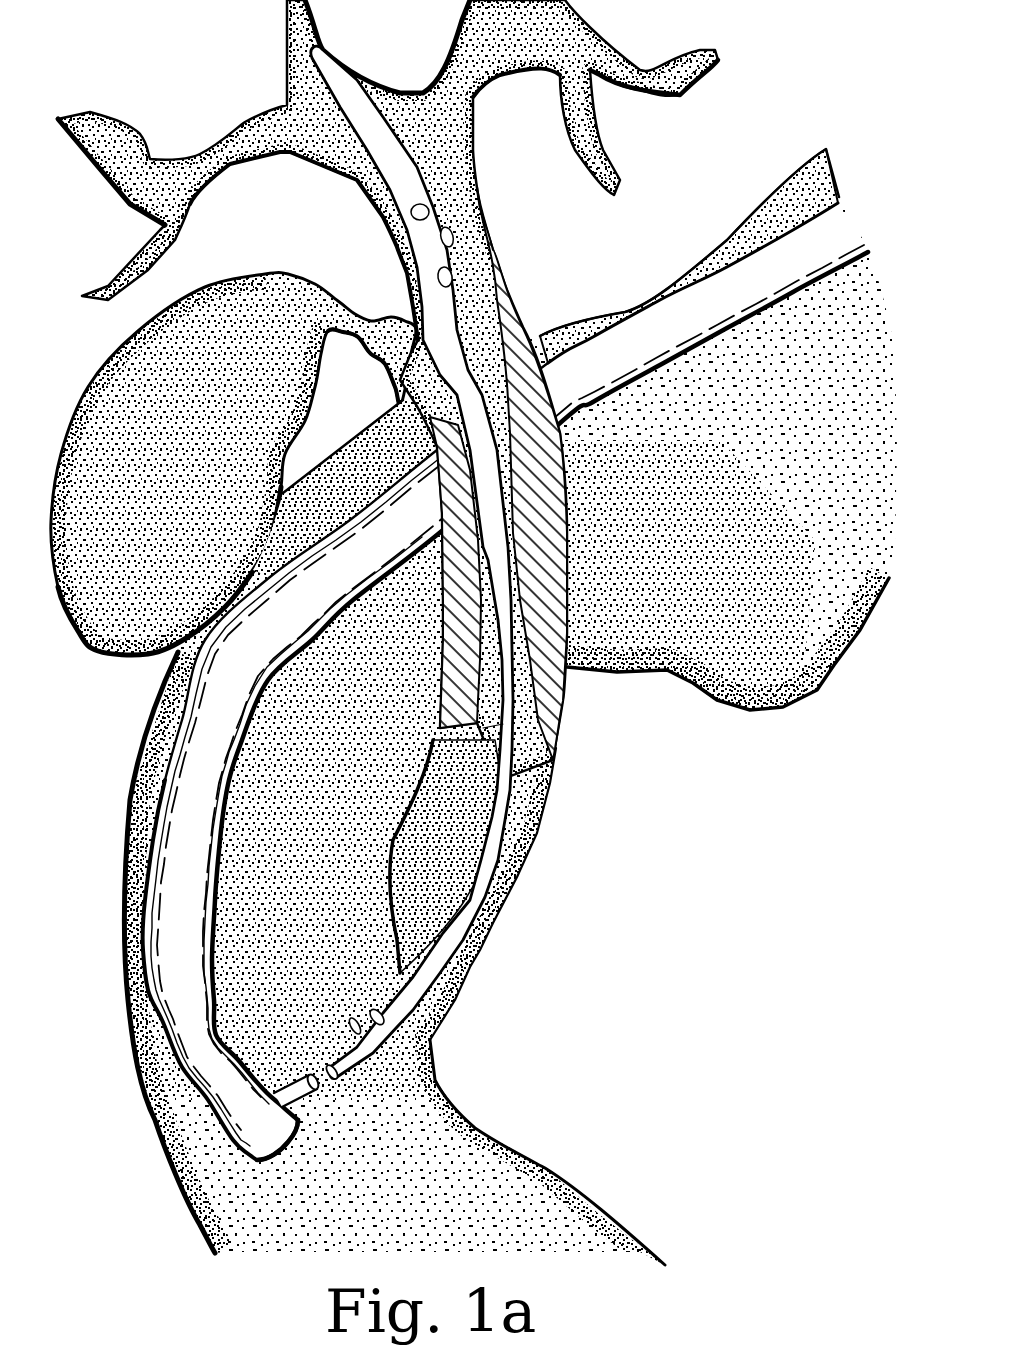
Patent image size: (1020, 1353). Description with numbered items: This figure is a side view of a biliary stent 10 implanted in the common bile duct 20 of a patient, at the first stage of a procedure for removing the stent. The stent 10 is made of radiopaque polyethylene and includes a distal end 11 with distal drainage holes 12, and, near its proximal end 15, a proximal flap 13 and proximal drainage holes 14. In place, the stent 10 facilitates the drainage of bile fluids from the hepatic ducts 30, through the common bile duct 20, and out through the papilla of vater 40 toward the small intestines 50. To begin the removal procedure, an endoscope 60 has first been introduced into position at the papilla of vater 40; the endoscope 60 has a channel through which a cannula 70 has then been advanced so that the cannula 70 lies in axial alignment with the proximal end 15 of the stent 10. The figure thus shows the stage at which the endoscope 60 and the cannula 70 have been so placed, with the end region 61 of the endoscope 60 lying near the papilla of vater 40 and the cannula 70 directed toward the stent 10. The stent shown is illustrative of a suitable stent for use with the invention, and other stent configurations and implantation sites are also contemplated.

The biliary stent 10 is at (467, 285).
The distal end 11 is at (394, 563).
The distal drainage holes 12 is at (441, 238).
The proximal flap 13 is at (351, 1027).
The proximal drainage holes 14 is at (374, 1009).
The proximal end 15 is at (316, 1066).
The common bile duct 20 is at (483, 728).
The hepatic ducts 30 is at (238, 91).
The papilla of vater 40 is at (401, 1030).
The small intestines 50 is at (426, 1246).
The endoscope 60 is at (152, 875).
The sheath distal end 61 is at (274, 1163).
The cannula 70 is at (313, 1097).